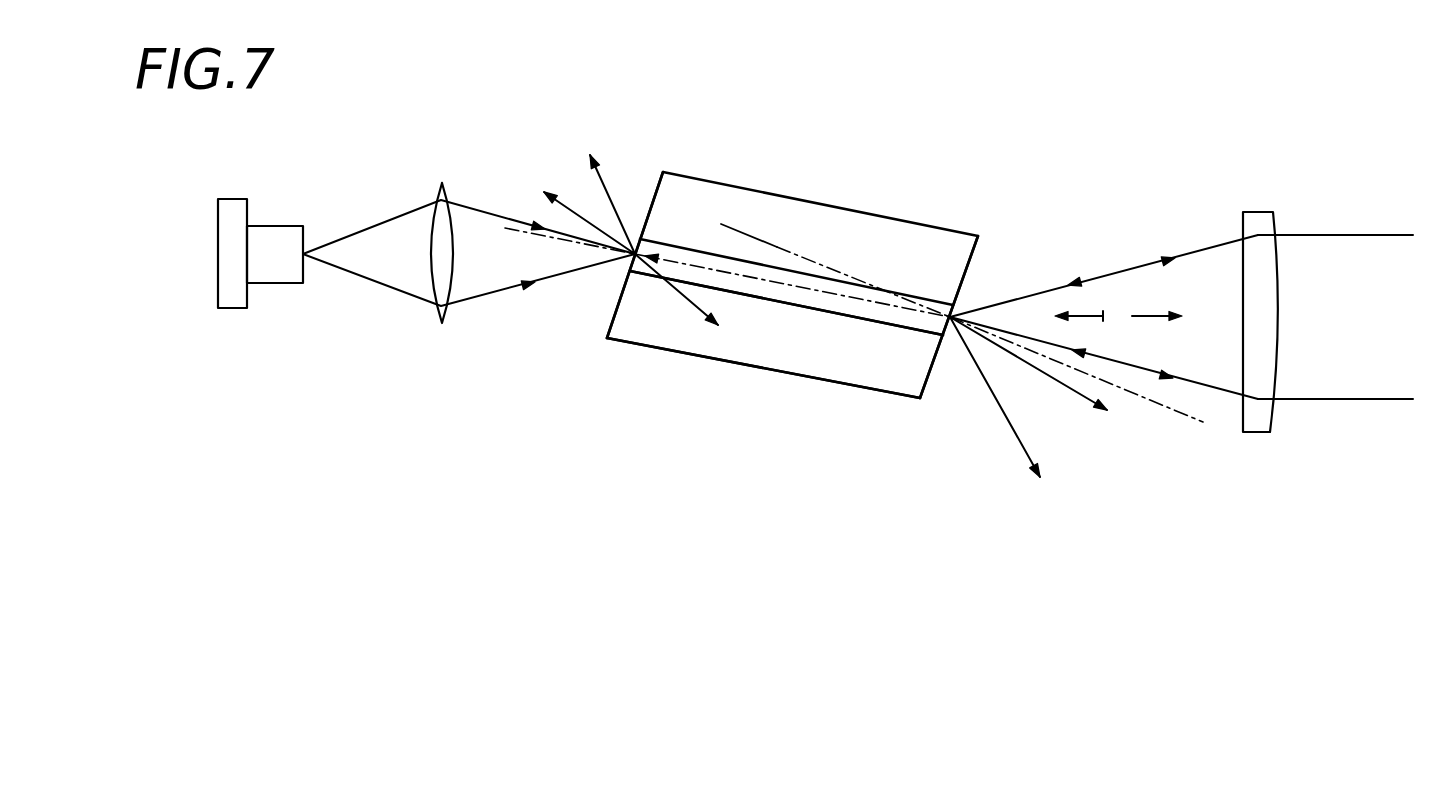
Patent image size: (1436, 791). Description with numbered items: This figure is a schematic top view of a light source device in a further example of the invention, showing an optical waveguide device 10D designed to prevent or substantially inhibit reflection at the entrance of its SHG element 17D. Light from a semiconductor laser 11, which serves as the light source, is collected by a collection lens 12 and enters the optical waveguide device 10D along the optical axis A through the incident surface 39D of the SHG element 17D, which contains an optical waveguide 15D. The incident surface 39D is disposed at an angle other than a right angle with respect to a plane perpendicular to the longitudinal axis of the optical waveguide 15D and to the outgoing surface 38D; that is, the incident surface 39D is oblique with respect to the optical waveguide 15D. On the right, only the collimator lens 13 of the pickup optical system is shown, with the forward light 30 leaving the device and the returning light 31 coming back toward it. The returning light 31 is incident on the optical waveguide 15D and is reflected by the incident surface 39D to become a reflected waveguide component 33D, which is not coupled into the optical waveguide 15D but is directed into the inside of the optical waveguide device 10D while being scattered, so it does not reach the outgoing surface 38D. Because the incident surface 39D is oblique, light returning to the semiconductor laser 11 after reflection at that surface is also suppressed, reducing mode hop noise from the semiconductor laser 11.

The semiconductor laser 11 is at (233, 310).
The collection lens 12 is at (441, 186).
The collimator lens 13 is at (1257, 210).
The optical waveguide device 10D is at (727, 163).
The optical waveguide 15D is at (837, 314).
The SHG element 17D is at (753, 365).
The reflected waveguide component 33D is at (683, 295).
The outgoing surface 38D is at (928, 373).
The incident surface 39D is at (613, 308).
The forward light direction 30 is at (1153, 316).
The returning light 31 is at (1103, 312).
The optical axis A is at (716, 266).